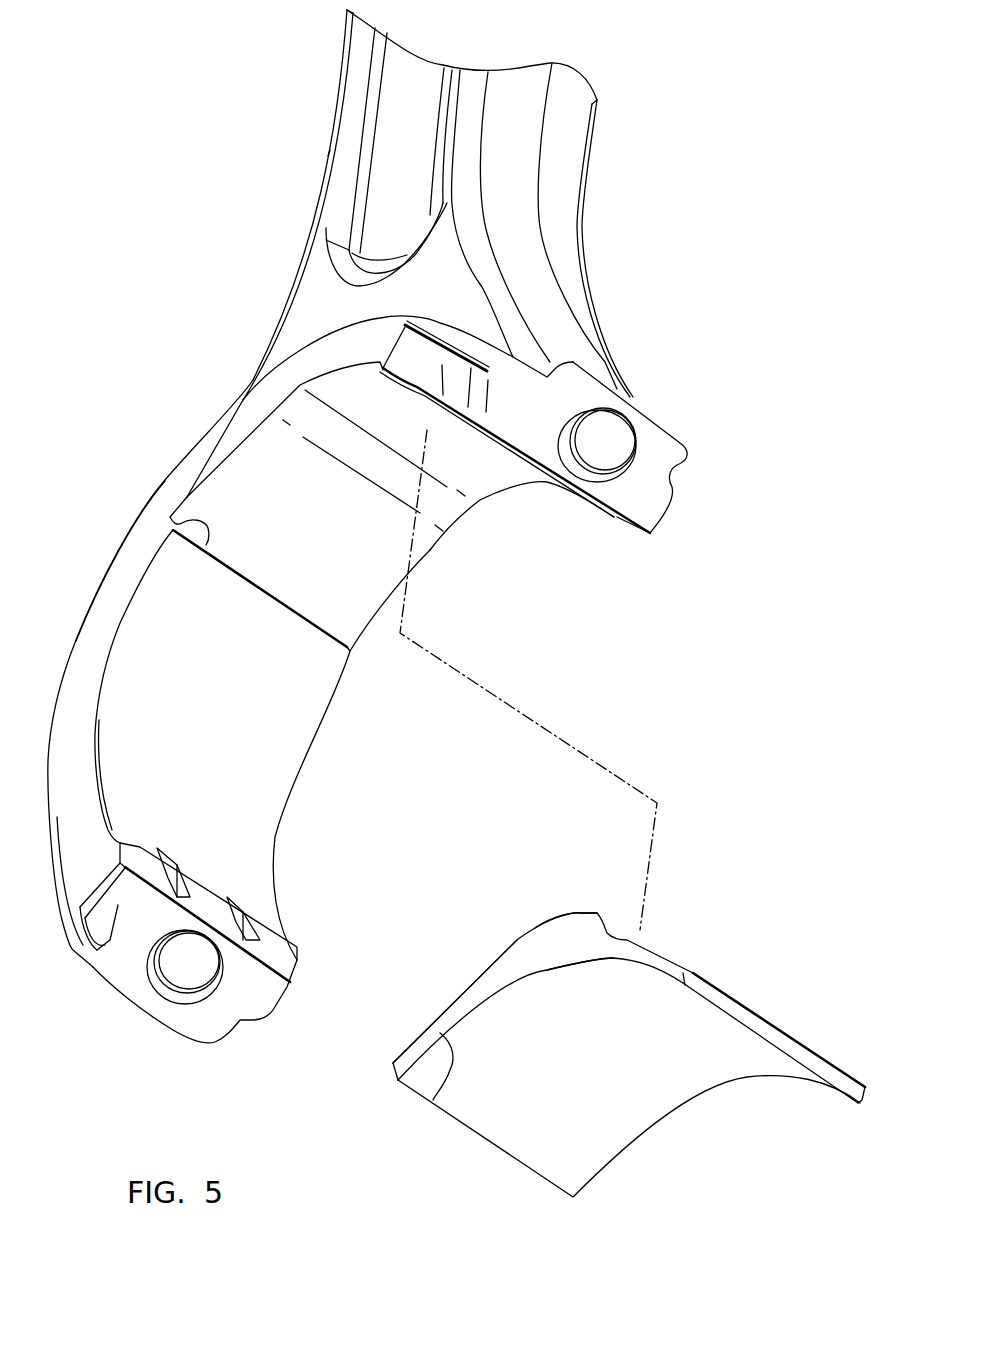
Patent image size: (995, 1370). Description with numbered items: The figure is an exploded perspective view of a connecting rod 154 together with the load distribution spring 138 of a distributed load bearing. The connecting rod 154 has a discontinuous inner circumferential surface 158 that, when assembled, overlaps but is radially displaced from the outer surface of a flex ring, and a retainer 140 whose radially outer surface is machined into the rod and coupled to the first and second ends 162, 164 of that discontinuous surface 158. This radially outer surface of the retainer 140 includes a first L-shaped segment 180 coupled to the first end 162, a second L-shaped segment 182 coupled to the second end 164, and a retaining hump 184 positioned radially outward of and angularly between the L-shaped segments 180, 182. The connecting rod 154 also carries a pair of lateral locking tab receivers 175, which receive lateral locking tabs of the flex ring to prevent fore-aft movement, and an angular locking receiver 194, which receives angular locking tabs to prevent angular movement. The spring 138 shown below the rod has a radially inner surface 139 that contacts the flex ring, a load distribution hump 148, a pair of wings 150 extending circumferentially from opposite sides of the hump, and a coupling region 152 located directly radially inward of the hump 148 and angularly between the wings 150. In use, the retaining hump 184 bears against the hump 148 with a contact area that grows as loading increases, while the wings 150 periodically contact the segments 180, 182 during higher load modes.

The load distribution spring 138 is at (710, 1107).
The radially inner surface 139 is at (440, 1033).
The retainer 140 is at (246, 328).
The load distribution hump 148 is at (563, 913).
The wings 150 is at (663, 950).
The coupling region 152 is at (570, 952).
The connecting rod 154 is at (127, 208).
The discontinuous inner circumferential surface 158 is at (233, 836).
The first end 162 is at (206, 548).
The second end 164 is at (490, 343).
The lateral locking tab receivers 175 is at (230, 893).
The first L-shaped segment 180 is at (187, 496).
The second L-shaped segment 182 is at (425, 336).
The retaining hump 184 is at (335, 357).
The angular locking receiver 194 is at (300, 977).